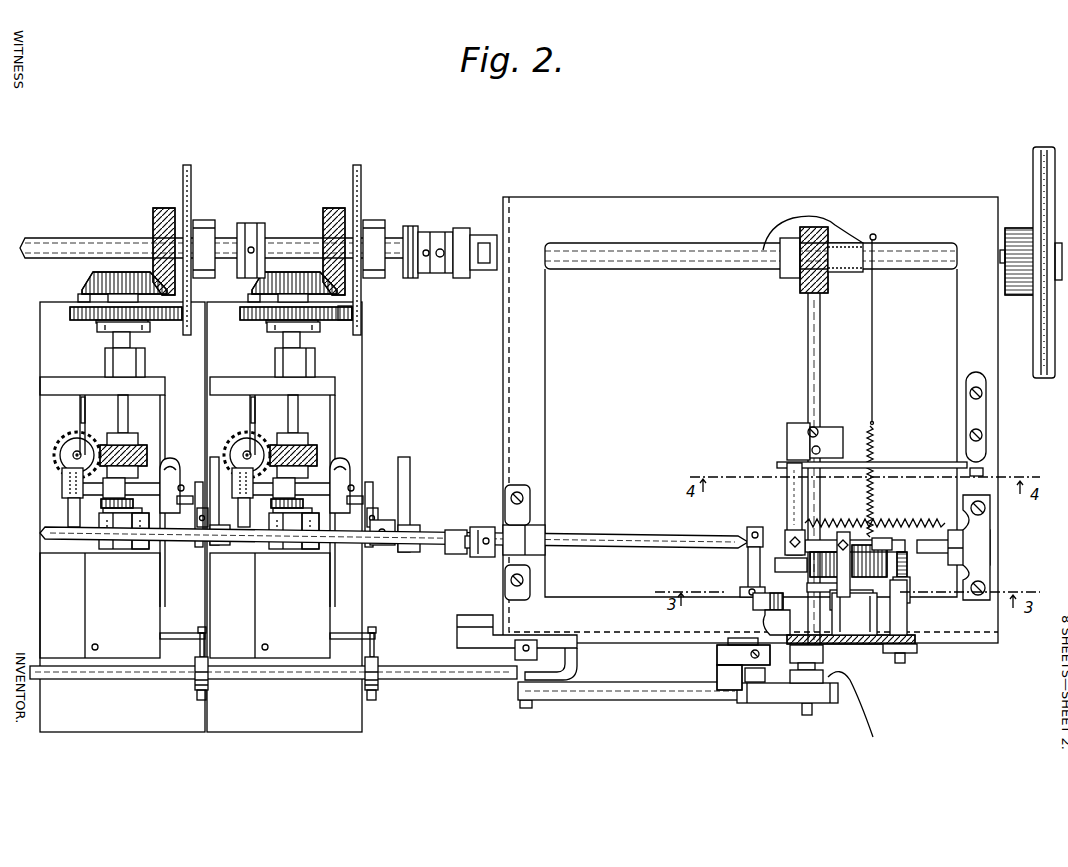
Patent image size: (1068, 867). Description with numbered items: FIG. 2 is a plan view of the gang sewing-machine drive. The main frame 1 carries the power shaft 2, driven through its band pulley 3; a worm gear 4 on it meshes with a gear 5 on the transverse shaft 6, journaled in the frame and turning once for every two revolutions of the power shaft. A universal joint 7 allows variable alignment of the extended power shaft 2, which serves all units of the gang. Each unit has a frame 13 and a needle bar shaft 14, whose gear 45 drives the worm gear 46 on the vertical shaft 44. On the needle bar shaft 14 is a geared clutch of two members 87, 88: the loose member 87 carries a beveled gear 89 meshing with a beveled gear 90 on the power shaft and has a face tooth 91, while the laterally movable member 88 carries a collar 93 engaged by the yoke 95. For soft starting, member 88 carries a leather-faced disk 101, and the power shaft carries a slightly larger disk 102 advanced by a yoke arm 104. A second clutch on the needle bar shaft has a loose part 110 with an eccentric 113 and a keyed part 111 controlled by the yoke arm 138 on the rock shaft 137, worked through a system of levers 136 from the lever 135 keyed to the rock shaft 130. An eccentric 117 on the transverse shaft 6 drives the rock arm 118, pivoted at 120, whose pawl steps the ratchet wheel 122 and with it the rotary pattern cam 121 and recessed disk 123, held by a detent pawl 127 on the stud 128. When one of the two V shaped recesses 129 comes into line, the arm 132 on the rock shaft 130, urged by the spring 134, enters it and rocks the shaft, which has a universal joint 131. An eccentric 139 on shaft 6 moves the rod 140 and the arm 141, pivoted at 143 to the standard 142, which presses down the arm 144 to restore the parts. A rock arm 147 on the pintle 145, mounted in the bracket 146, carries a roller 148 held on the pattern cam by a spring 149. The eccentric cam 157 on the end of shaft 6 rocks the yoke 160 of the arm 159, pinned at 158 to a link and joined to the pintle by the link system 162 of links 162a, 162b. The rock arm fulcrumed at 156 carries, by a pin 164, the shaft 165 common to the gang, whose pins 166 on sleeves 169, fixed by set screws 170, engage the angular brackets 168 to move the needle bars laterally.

The main frame 1 is at (727, 199).
The power shaft 2 is at (72, 240).
The band pulley 3 is at (1035, 170).
The worm gear 4 is at (800, 290).
The gear 5 is at (842, 272).
The transverse shaft 6 is at (808, 352).
The universal joint 7 is at (434, 238).
The frame 13 is at (148, 470).
The needle bar shaft 14 is at (128, 425).
The vertical shaft 44 is at (72, 456).
The gear 45 is at (80, 452).
The worm gear 46 is at (68, 440).
The clutch member 87 is at (85, 296).
The clutch member 88 is at (90, 323).
The beveled gear 89 is at (108, 280).
The beveled gear 90 is at (168, 210).
The tooth 91 is at (362, 312).
The collar 93 is at (110, 345).
The yoke 95 is at (150, 331).
The disk 101 is at (70, 313).
The disk 102 is at (192, 195).
The yoke arm 104 is at (410, 228).
The clutch part 110 is at (137, 550).
The clutch part 111 is at (125, 490).
The eccentric 113 is at (118, 550).
The eccentric 117 is at (790, 572).
The rock arm 118 is at (852, 640).
The pivot 120 is at (842, 609).
The rotary pattern cam 121 is at (880, 545).
The ratchet wheel 122 is at (876, 538).
The recessed disk 123 is at (990, 575).
The detent pawl 127 is at (910, 568).
The stud 128 is at (907, 605).
The V shaped recesses 129 is at (825, 662).
The rock shaft 130 is at (55, 540).
The universal joint 131 is at (468, 528).
The arm 132 is at (755, 605).
The spring 134 is at (876, 452).
The lever 135 is at (215, 455).
The system of levers 136 is at (196, 548).
The rock shaft 137 is at (62, 486).
The yoke arm 138 is at (100, 502).
The eccentric 139 is at (866, 430).
The rod 140 is at (797, 423).
The arm 141 is at (880, 468).
The standard 142 is at (986, 450).
The pivot 143 is at (984, 471).
The arm 144 is at (787, 494).
The pintle 145 is at (748, 560).
The bracket 146 is at (765, 595).
The rock arm 147 is at (757, 527).
The roller 148 is at (814, 523).
The spring 149 is at (990, 520).
The fulcrum 156 is at (520, 655).
The eccentric cam 157 is at (865, 642).
The pin 158 is at (527, 708).
The arm 159 is at (660, 700).
The yoke 160 is at (790, 703).
The link system 162 is at (715, 664).
The link 162a is at (732, 655).
The link 162b is at (732, 680).
The pin 164 is at (505, 655).
The shaft 165 is at (95, 680).
The pin 166 is at (208, 636).
The angular bracket 168 is at (181, 633).
The sleeve 169 is at (198, 688).
The set screw 170 is at (205, 700).